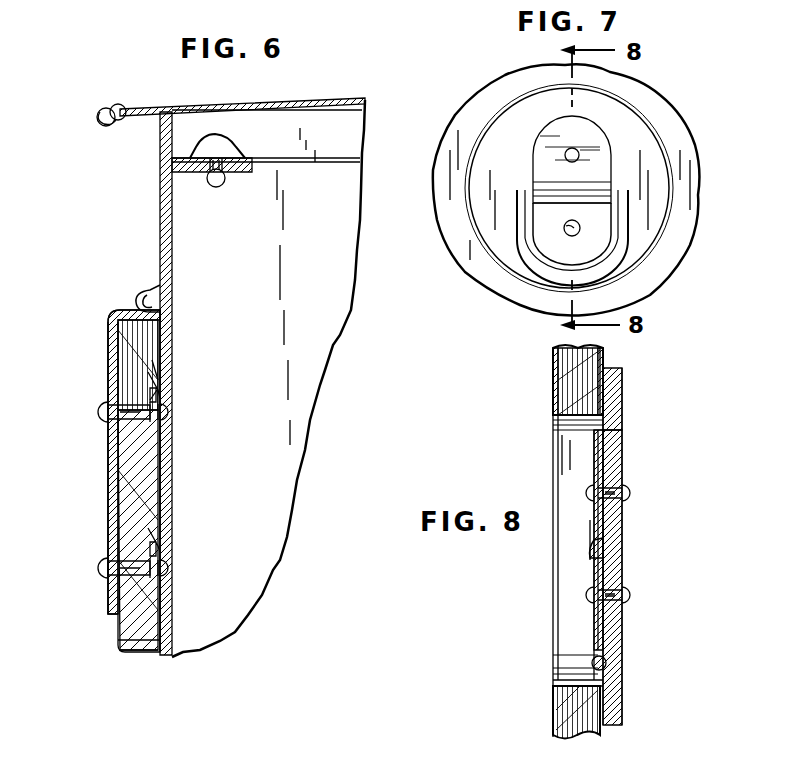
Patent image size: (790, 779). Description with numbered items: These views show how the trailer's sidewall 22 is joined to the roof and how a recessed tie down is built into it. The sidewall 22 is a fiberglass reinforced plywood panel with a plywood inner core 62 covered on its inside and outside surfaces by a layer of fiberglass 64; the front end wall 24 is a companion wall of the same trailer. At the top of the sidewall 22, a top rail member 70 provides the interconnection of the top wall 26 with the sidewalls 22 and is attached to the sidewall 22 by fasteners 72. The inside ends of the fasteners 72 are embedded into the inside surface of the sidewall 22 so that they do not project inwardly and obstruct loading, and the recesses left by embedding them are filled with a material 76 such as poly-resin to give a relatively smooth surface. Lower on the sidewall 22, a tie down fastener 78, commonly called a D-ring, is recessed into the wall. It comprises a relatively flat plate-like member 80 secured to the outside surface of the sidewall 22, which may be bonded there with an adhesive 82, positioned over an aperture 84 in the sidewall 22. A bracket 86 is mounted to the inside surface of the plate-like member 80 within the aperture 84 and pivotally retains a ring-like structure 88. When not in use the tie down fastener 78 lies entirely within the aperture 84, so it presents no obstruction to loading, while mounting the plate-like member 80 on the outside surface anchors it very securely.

In FIG. 6, the sidewall 22 is at (112, 660).
In FIG. 7, the sidewall 22 is at (665, 122).
In FIG. 8, the sidewall 22 is at (553, 381).
In FIG. 6, the front end wall 24 is at (325, 310).
In FIG. 6, the top wall 26 is at (338, 99).
In FIG. 6, the plywood inner core 62 is at (140, 652).
In FIG. 8, the plywood inner core 62 is at (550, 341).
In FIG. 6, the layer of fiberglass 64 is at (165, 630).
In FIG. 7, the layer of fiberglass 64 is at (480, 265).
In FIG. 8, the layer of fiberglass 64 is at (553, 360).
In FIG. 6, the top rail member 70 is at (158, 244).
In FIG. 6, the fastener 72 is at (100, 408).
In FIG. 6, the material 76 is at (163, 396).
In FIG. 7, the tie down fastener 78 is at (647, 176).
In FIG. 8, the tie down fastener 78 is at (548, 588).
In FIG. 7, the plate-like member 80 is at (653, 197).
In FIG. 8, the plate-like member 80 is at (622, 441).
In FIG. 8, the adhesive 82 is at (610, 393).
In FIG. 8, the aperture 84 is at (570, 456).
In FIG. 7, the bracket 86 is at (542, 163).
In FIG. 8, the bracket 86 is at (597, 473).
In FIG. 7, the ring-like structure 88 is at (518, 240).
In FIG. 8, the ring-like structure 88 is at (592, 646).